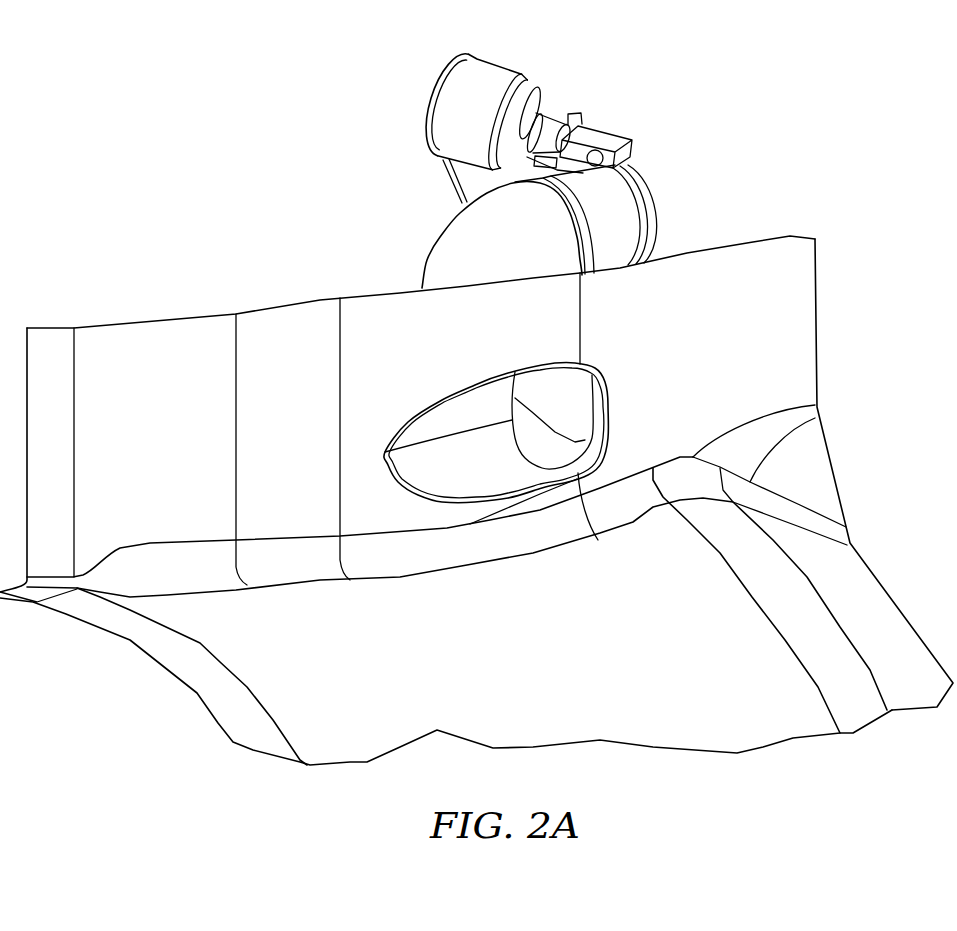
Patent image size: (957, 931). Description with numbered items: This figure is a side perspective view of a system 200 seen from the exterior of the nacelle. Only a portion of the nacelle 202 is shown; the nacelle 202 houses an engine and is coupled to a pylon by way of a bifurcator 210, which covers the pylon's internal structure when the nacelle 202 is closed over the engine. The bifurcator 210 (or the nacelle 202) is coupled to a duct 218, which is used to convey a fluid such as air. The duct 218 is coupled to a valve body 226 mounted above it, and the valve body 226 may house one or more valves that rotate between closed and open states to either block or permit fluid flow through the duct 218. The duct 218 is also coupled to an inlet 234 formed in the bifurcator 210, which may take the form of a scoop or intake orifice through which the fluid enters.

The system 200 is at (867, 190).
The nacelle 202 is at (323, 672).
The bifurcator 210 is at (292, 363).
The duct 218 is at (495, 255).
The valve body 226 is at (520, 97).
The inlet 234 is at (485, 463).